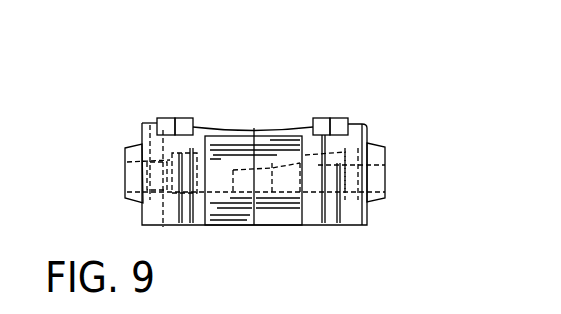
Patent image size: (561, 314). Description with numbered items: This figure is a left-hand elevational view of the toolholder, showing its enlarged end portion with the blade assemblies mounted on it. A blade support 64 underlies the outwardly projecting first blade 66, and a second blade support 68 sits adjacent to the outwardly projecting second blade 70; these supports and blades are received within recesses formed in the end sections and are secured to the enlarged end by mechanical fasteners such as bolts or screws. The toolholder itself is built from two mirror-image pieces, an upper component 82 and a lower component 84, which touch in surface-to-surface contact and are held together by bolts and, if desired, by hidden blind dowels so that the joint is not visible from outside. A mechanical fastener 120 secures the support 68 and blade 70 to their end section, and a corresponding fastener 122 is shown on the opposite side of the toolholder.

The blade support 64 is at (187, 118).
The first blade 66 is at (163, 117).
The blade support 68 is at (318, 117).
The second blade 70 is at (343, 118).
The upper component 82 is at (215, 213).
The lower component 84 is at (280, 213).
The mechanical fastener 120 is at (382, 167).
The side flange 122 is at (127, 178).